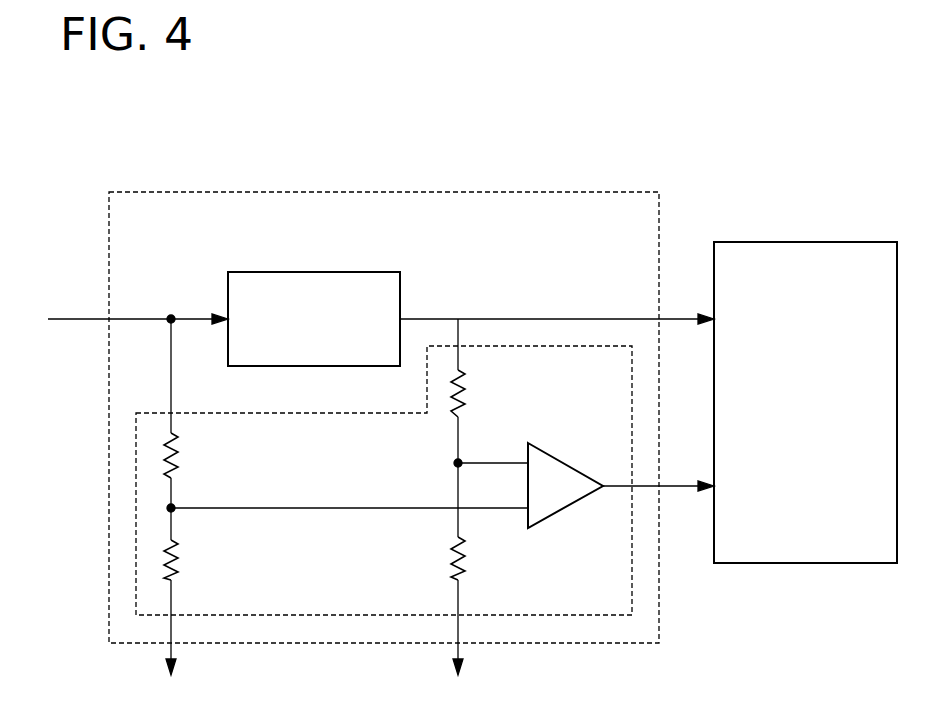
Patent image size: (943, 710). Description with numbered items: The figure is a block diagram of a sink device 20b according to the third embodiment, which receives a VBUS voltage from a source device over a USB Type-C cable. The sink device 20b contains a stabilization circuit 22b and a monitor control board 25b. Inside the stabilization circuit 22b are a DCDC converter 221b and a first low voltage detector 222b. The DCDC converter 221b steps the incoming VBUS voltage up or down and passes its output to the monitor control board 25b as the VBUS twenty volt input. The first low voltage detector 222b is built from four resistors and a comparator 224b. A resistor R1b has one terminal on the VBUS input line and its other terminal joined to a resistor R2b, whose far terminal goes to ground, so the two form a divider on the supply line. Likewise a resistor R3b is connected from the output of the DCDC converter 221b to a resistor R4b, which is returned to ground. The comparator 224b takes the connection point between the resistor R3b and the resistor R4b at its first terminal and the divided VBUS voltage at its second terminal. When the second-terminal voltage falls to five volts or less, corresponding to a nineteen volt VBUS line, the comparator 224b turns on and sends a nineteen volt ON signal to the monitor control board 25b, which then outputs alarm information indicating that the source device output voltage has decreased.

The sink device 20b is at (508, 144).
The stabilization circuit 22b is at (560, 192).
The DCDC converter 221b is at (317, 272).
The first low voltage detector 222b is at (273, 413).
The comparator 224b is at (564, 460).
The monitor control board 25b is at (823, 242).
The resistor R1b is at (191, 455).
The resistor R2b is at (191, 560).
The resistor R3b is at (477, 393).
The resistor R4b is at (478, 558).